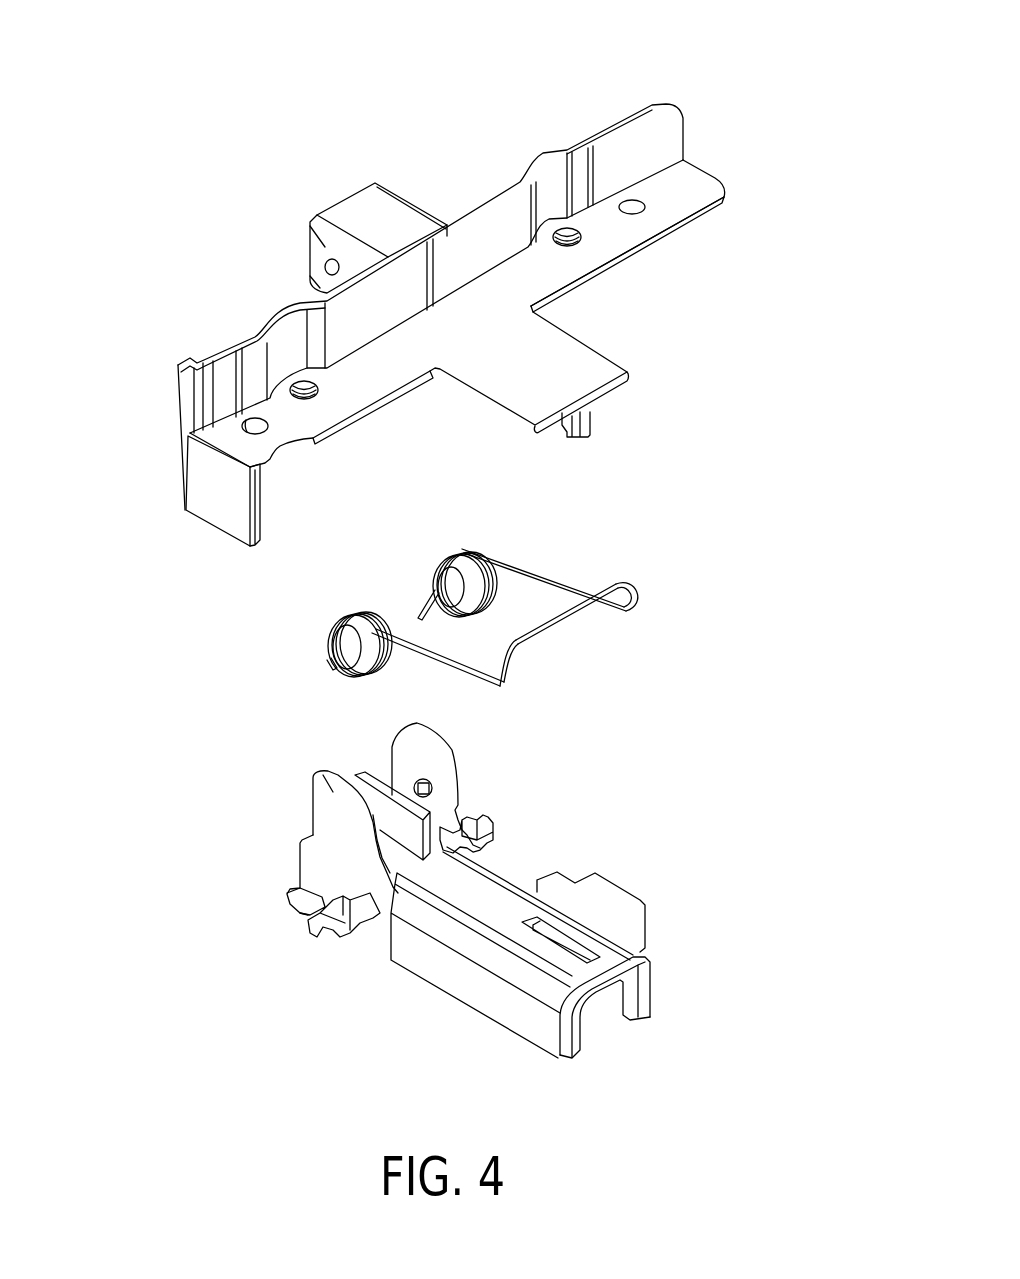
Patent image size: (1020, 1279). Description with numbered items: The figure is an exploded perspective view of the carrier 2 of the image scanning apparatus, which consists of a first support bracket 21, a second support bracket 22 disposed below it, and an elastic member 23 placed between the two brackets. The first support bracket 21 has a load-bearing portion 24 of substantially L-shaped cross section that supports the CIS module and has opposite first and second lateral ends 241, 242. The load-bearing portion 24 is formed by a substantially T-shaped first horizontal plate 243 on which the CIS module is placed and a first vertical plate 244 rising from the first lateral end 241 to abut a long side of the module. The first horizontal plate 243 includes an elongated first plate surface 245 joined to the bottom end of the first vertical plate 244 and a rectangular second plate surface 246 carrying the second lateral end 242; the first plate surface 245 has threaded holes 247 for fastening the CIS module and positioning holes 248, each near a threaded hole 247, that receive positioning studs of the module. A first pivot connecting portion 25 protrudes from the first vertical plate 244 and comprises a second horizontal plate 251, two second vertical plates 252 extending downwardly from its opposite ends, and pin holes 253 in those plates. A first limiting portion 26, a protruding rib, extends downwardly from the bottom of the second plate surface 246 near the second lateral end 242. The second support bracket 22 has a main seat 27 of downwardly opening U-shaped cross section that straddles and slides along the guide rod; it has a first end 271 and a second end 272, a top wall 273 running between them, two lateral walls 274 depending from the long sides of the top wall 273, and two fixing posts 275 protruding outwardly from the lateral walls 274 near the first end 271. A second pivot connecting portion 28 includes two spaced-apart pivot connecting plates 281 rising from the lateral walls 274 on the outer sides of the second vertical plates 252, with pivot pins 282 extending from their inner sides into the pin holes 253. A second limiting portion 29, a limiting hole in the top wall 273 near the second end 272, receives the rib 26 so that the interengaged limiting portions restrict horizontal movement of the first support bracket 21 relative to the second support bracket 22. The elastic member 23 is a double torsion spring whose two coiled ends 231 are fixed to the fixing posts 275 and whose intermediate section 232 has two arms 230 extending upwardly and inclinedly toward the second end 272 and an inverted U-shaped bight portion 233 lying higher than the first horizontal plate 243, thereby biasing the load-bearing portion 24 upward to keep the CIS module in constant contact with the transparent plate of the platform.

The carrier 2 is at (229, 115).
The first support bracket 21 is at (716, 130).
The second support bracket 22 is at (469, 1040).
The elastic member 23 is at (648, 662).
The load-bearing portion 24 is at (571, 112).
The first pivot connecting portion 25 is at (381, 160).
The first limiting portion 26 is at (592, 423).
The main seat 27 is at (543, 1044).
The second pivot connecting portion 28 is at (302, 806).
The second limiting portion 29 is at (575, 945).
The arms 230 is at (543, 573).
The coiled ends 231 is at (440, 565).
The intermediate section 232 is at (585, 561).
The bight portion 233 is at (573, 625).
The first lateral end 241 is at (180, 450).
The second lateral end 242 is at (615, 390).
The first horizontal plate 243 is at (700, 222).
The first vertical plate 244 is at (470, 248).
The first plate surface 245 is at (700, 190).
The second plate surface 246 is at (572, 353).
The threaded holes 247 is at (316, 396).
The positioning holes 248 is at (253, 432).
The second horizontal plate 251 is at (368, 212).
The second vertical plates 252 is at (320, 248).
The pin holes 253 is at (330, 268).
The first end 271 is at (301, 840).
The second end 272 is at (617, 957).
The top wall 273 is at (490, 892).
The lateral walls 274 is at (455, 978).
The fixing posts 275 is at (333, 920).
The pivot connecting plates 281 is at (403, 765).
The pivot pins 282 is at (433, 786).